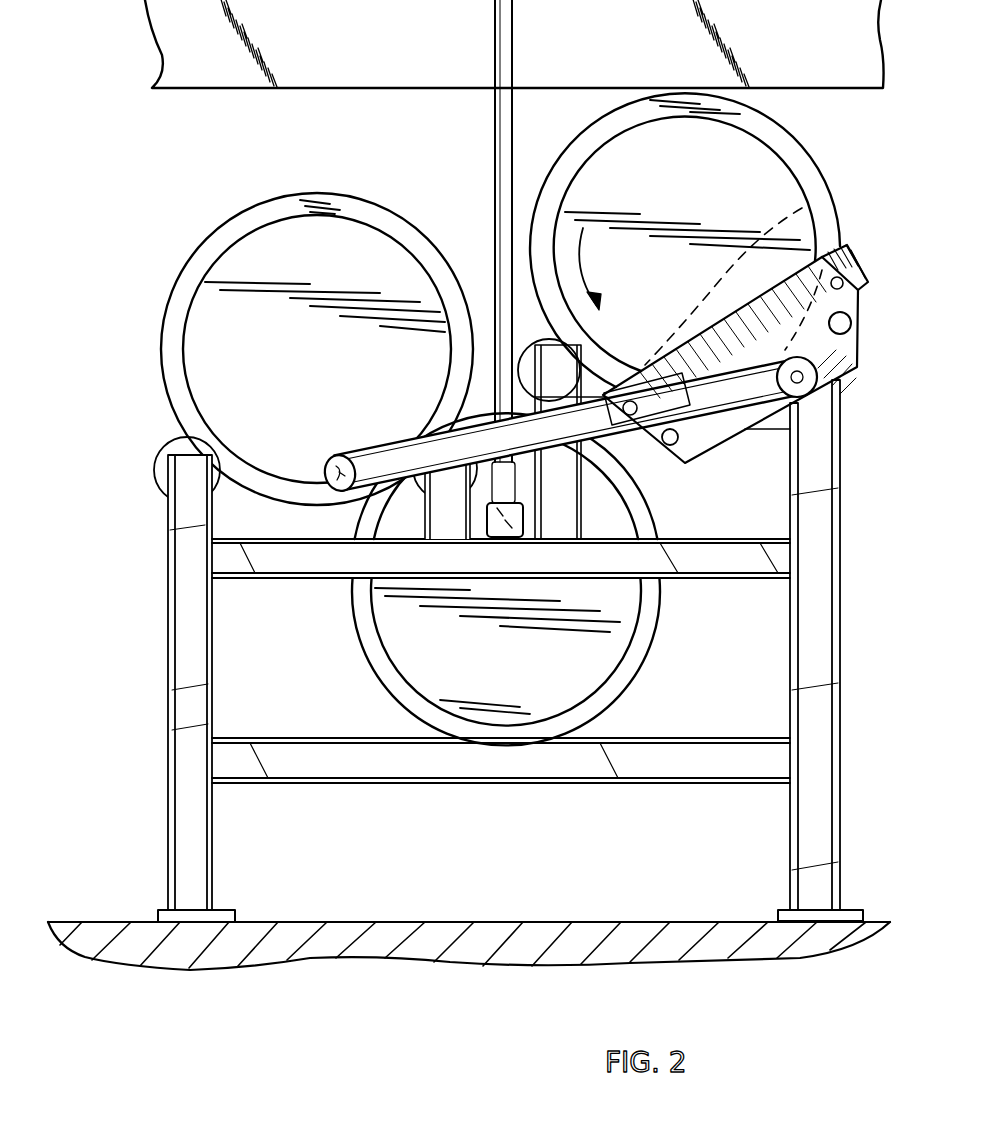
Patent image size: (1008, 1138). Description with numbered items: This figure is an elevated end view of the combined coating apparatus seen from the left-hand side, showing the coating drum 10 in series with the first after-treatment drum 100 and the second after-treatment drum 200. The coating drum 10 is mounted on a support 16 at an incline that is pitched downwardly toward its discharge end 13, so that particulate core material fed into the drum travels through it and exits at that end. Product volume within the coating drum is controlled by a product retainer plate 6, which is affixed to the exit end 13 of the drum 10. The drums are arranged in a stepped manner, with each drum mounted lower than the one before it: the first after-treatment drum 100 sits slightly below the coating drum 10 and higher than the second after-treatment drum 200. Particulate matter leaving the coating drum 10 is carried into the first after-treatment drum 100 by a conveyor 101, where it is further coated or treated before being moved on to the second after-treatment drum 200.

The first after-treatment drum 100 is at (217, 243).
The coating drum 10 is at (816, 158).
The discharge end 13 is at (685, 204).
The product retainer plate 6 is at (858, 304).
The conveyor 101 is at (653, 463).
The support 16 is at (832, 482).
The second after-treatment drum 200 is at (628, 648).